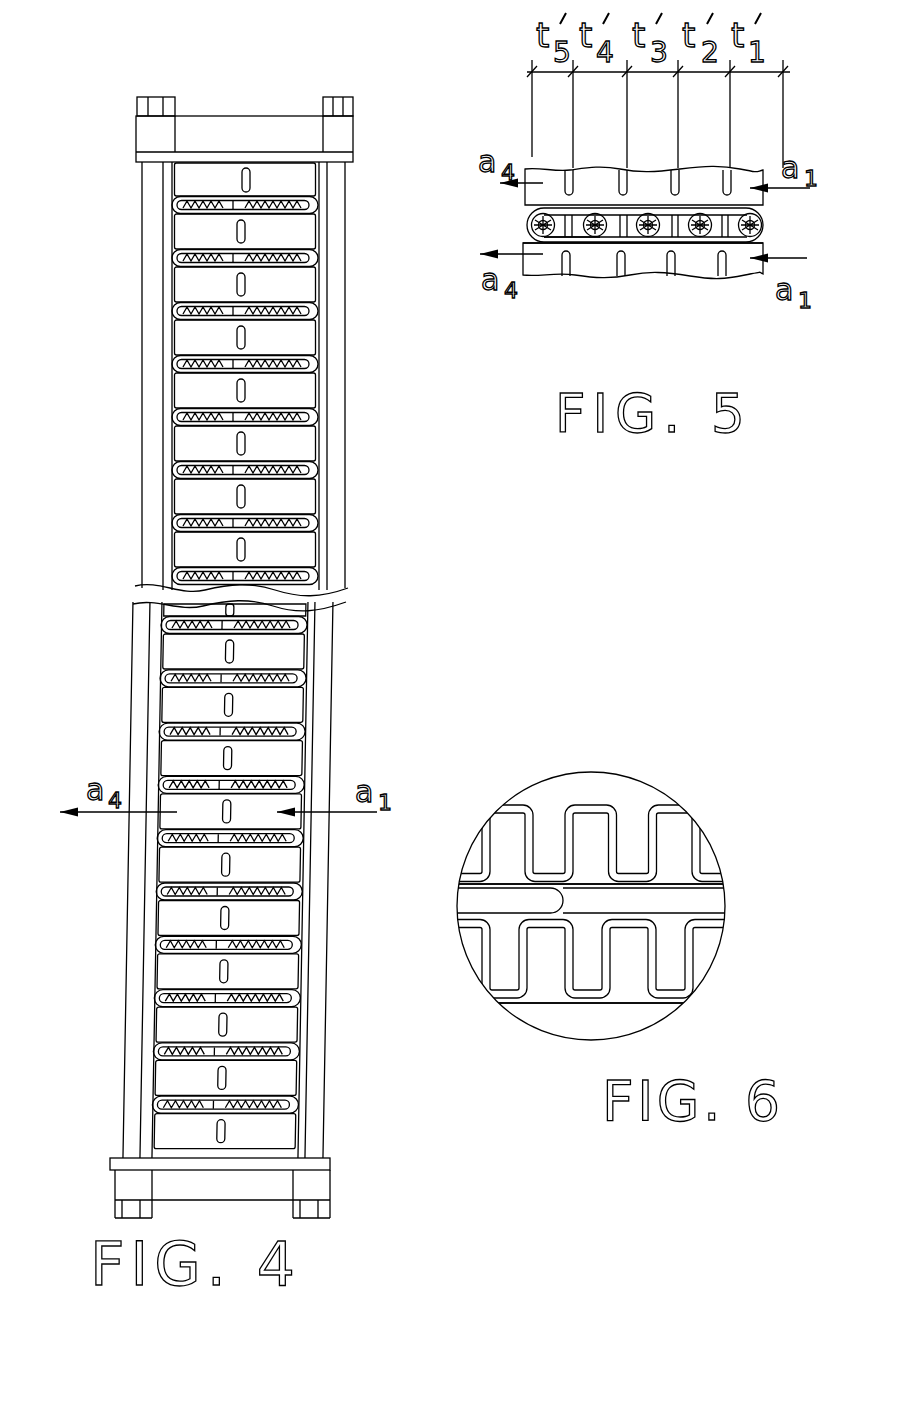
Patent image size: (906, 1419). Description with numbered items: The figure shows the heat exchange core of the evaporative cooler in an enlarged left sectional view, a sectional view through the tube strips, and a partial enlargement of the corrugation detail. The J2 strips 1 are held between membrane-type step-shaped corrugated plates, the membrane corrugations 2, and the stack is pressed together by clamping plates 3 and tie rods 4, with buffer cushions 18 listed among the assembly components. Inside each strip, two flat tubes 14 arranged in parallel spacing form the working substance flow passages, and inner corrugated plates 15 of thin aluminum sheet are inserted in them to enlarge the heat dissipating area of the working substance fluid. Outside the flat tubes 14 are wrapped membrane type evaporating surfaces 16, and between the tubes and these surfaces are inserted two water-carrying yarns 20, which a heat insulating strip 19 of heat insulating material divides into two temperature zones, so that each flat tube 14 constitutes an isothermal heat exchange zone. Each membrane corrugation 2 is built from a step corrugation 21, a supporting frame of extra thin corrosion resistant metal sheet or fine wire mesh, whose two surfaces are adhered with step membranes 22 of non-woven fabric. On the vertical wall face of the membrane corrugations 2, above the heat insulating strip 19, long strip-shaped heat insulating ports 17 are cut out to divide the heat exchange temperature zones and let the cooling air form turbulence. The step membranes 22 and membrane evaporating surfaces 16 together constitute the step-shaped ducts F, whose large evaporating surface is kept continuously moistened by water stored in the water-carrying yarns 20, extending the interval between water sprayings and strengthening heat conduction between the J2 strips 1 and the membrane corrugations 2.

In FIG. 4, the J2 strips 1 is at (313, 733).
In FIG. 5, the J2 strips 1 is at (763, 239).
In FIG. 6, the J2 strips 1 is at (702, 912).
In FIG. 4, the membrane-type step-shaped corrugated plates (membrane corrugations) 2 is at (320, 280).
In FIG. 5, the membrane-type step-shaped corrugated plates (membrane corrugations) 2 is at (757, 266).
In FIG. 4, the clamping plates 3 is at (272, 116).
In FIG. 4, the tie rods 4 is at (338, 513).
In FIG. 4, the flat tubes 14 is at (197, 520).
In FIG. 5, the flat tubes 14 is at (730, 242).
In FIG. 6, the flat tubes 14 is at (498, 912).
In FIG. 4, the inner corrugated plates 15 is at (197, 370).
In FIG. 5, the inner corrugated plates 15 is at (703, 240).
In FIG. 4, the membrane type evaporating surfaces 16 is at (193, 318).
In FIG. 5, the membrane type evaporating surfaces 16 is at (633, 244).
In FIG. 6, the membrane type evaporating surfaces 16 is at (517, 887).
In FIG. 4, the heat insulating ports 17 is at (242, 184).
In FIG. 5, the heat insulating ports 17 is at (585, 262).
In FIG. 4, the buffer cushions 18 is at (142, 164).
In FIG. 4, the heat insulating strips 19 is at (243, 470).
In FIG. 5, the heat insulating strips 19 is at (560, 242).
In FIG. 4, the water-carrying yarns 20 is at (235, 414).
In FIG. 5, the water-carrying yarns 20 is at (562, 220).
In FIG. 6, the step-shaped corrugated plates (step corrugations) 21 is at (613, 848).
In FIG. 6, the step-shaped membrane type evaporating surfaces (step membranes) 22 is at (682, 863).
In FIG. 6, the step-shaped ducts F is at (505, 965).